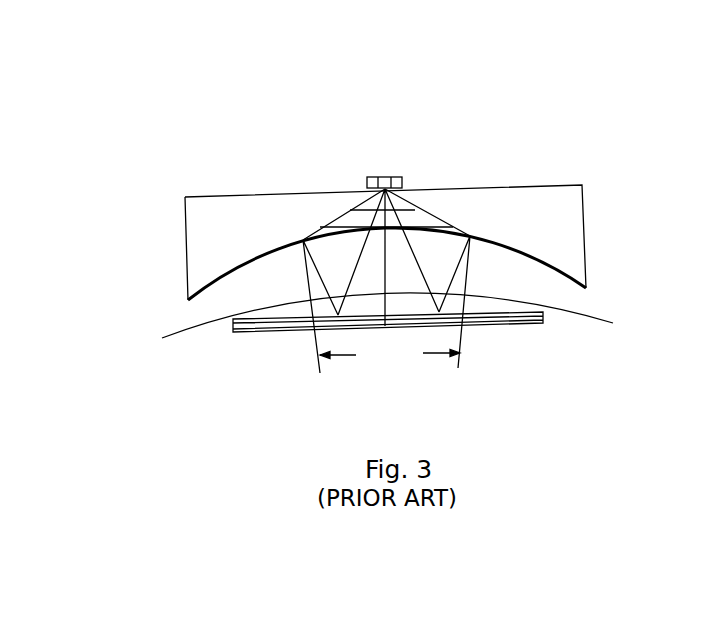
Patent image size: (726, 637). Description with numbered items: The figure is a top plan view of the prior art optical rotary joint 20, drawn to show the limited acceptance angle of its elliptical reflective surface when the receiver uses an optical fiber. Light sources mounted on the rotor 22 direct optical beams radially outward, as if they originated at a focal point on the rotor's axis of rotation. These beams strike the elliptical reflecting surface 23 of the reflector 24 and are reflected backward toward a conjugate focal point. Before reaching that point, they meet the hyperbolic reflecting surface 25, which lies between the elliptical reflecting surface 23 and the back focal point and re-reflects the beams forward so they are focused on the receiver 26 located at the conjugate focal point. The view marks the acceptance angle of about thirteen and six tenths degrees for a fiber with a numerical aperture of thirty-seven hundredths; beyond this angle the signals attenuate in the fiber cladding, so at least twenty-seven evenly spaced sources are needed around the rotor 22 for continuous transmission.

The optical rotary joint 20 is at (448, 128).
The rotor 22 is at (610, 316).
The elliptical reflecting surface 23 is at (452, 238).
The reflector 24 is at (190, 196).
The hyperbolic reflecting surface 25 is at (270, 318).
The receiver 26 is at (366, 173).